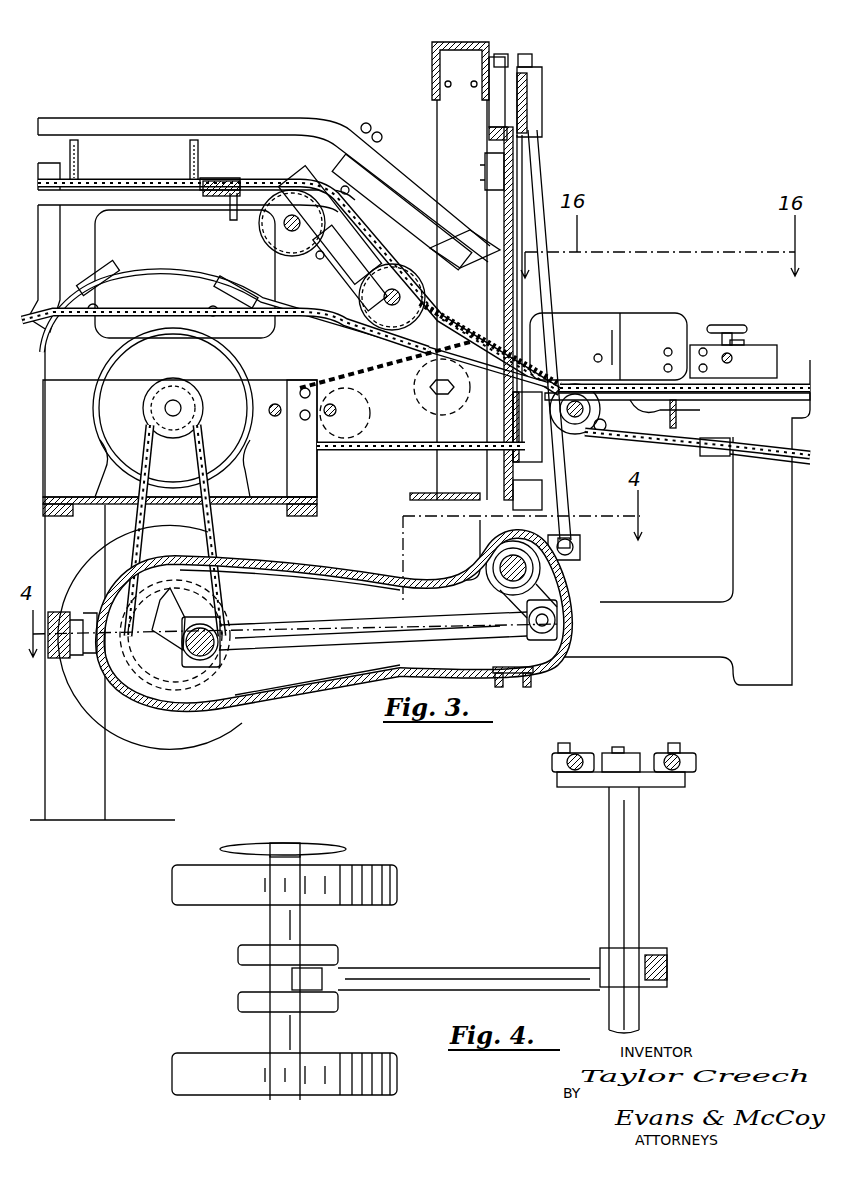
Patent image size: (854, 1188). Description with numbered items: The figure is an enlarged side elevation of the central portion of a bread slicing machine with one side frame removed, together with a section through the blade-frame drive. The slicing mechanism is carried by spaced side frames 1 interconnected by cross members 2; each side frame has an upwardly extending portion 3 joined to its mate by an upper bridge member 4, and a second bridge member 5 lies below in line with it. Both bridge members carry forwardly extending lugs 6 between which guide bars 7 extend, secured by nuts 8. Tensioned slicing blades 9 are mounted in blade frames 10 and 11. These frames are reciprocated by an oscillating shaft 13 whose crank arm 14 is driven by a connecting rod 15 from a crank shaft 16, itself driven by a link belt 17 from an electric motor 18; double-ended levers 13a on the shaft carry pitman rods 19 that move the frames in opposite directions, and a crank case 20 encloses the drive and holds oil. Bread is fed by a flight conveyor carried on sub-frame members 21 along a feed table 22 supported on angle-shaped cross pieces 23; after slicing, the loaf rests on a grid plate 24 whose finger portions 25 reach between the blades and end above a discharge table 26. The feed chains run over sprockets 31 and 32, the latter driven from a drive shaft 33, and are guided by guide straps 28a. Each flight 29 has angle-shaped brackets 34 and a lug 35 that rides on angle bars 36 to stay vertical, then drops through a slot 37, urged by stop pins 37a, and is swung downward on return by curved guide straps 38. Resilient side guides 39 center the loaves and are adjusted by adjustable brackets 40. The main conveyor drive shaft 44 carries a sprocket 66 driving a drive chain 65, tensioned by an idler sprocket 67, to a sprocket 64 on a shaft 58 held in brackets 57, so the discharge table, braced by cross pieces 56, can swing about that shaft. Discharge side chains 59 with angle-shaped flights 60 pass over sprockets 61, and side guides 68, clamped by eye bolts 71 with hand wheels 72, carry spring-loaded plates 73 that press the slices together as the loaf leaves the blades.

In FIG. 3, the side frames 1 is at (783, 572).
In FIG. 3, the cross members 2 is at (62, 663).
In FIG. 3, the upwardly extending portion 3 is at (430, 110).
In FIG. 3, the upper bridge member 4 is at (466, 45).
In FIG. 3, the second bridge member 5 is at (410, 498).
In FIG. 3, the lugs 6 is at (578, 492).
In FIG. 3, the guide bars 7 is at (492, 110).
In FIG. 3, the nuts 8 is at (512, 54).
In FIG. 3, the slicing blades 9 is at (514, 170).
In FIG. 3, the blade frame 10 is at (530, 100).
In FIG. 3, the blade frame 11 is at (489, 140).
In FIG. 3, the oscillating shaft 13 is at (500, 580).
In FIG. 4, the oscillating shaft 13 is at (640, 878).
In FIG. 3, the double-ended levers 13a is at (580, 552).
In FIG. 4, the double-ended levers 13a is at (660, 780).
In FIG. 3, the crank arm 14 is at (560, 594).
In FIG. 4, the crank arm 14 is at (655, 948).
In FIG. 3, the connecting rod 15 is at (340, 645).
In FIG. 4, the connecting rod 15 is at (470, 975).
In FIG. 3, the crank shaft 16 is at (185, 615).
In FIG. 4, the crank shaft 16 is at (268, 962).
In FIG. 3, the link belt 17 is at (218, 520).
In FIG. 3, the electric motor 18 is at (180, 412).
In FIG. 3, the pitman rods 19 is at (466, 556).
In FIG. 4, the pitman rods 19 is at (670, 753).
In FIG. 3, the crank case 20 is at (285, 697).
In FIG. 3, the sub-frame members 21 is at (88, 232).
In FIG. 3, the feed table 22 is at (125, 178).
In FIG. 3, the cross pieces 23 is at (232, 222).
In FIG. 3, the guide or grid plate 24 is at (490, 350).
In FIG. 3, the finger portions 25 is at (562, 380).
In FIG. 3, the discharge table 26 is at (765, 400).
In FIG. 3, the guide straps 28a is at (395, 185).
In FIG. 3, the flights 29 is at (200, 150).
In FIG. 3, the sprockets 31 is at (280, 245).
In FIG. 3, the sprockets 32 is at (355, 288).
In FIG. 3, the drive shaft 33 is at (392, 297).
In FIG. 3, the brackets 34 is at (230, 170).
In FIG. 3, the lug 35 is at (195, 200).
In FIG. 3, the angle bars 36 is at (48, 168).
In FIG. 3, the slot 37 is at (390, 240).
In FIG. 3, the stop pins 37a is at (470, 230).
In FIG. 3, the curved guide straps 38 is at (175, 262).
In FIG. 3, the side guides 39 is at (198, 118).
In FIG. 3, the adjustable brackets 40 is at (358, 126).
In FIG. 3, the main conveyor drive shaft 44 is at (320, 385).
In FIG. 3, the cross pieces 56 is at (678, 420).
In FIG. 3, the brackets 57 is at (665, 413).
In FIG. 3, the shaft 58 is at (605, 440).
In FIG. 3, the side chains 59 is at (758, 460).
In FIG. 3, the flights 60 is at (705, 460).
In FIG. 3, the sprockets 61 is at (614, 423).
In FIG. 3, the sprocket 64 is at (545, 465).
In FIG. 3, the drive chain 65 is at (355, 455).
In FIG. 3, the sprocket 66 is at (370, 422).
In FIG. 3, the idler sprocket 67 is at (442, 397).
In FIG. 3, the side guides 68 is at (776, 348).
In FIG. 3, the eye bolts 71 is at (728, 322).
In FIG. 3, the hand wheels 72 is at (748, 330).
In FIG. 3, the plate 73 is at (657, 315).